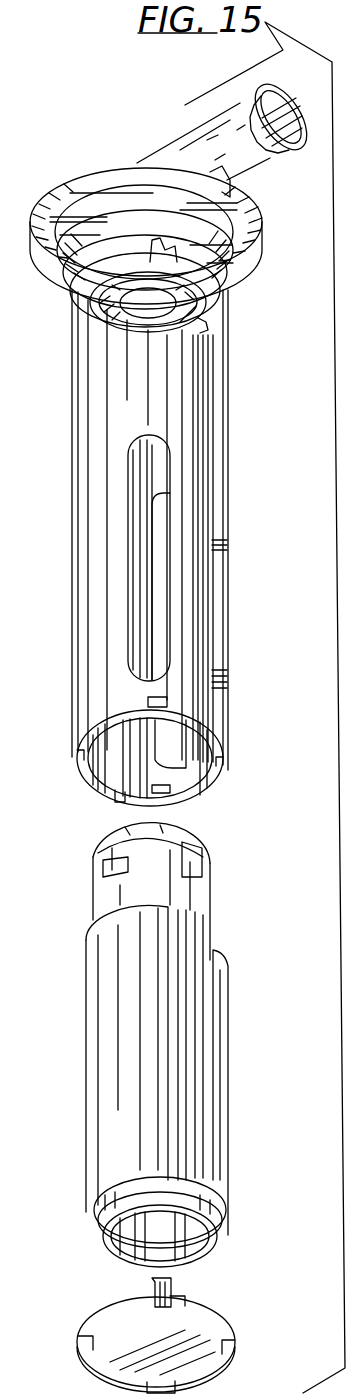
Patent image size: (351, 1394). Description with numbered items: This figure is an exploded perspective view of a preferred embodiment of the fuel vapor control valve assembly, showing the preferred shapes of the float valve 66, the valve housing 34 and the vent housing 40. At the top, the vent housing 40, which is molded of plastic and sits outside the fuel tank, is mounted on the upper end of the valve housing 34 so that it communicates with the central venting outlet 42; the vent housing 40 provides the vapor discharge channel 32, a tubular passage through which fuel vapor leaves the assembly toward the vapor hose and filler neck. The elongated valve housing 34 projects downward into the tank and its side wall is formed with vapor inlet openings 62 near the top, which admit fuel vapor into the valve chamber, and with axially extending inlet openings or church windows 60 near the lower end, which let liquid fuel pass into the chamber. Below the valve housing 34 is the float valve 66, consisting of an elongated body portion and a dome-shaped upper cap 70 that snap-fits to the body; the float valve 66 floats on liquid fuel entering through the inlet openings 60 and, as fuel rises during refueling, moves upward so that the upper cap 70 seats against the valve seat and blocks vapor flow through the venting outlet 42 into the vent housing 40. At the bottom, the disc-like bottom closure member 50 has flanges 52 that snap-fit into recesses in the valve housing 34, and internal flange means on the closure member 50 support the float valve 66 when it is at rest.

The vapor discharge channel 32 is at (297, 110).
The vent housing 40 is at (138, 147).
The venting outlet 42 is at (137, 305).
The vapor inlet openings 62 is at (207, 328).
The valve housing 34 is at (232, 435).
The inlet openings 60 is at (170, 563).
The upper cap 70 is at (174, 826).
The float valve 66 is at (232, 967).
The flanges 52 is at (172, 1287).
The bottom closure member 50 is at (205, 1350).